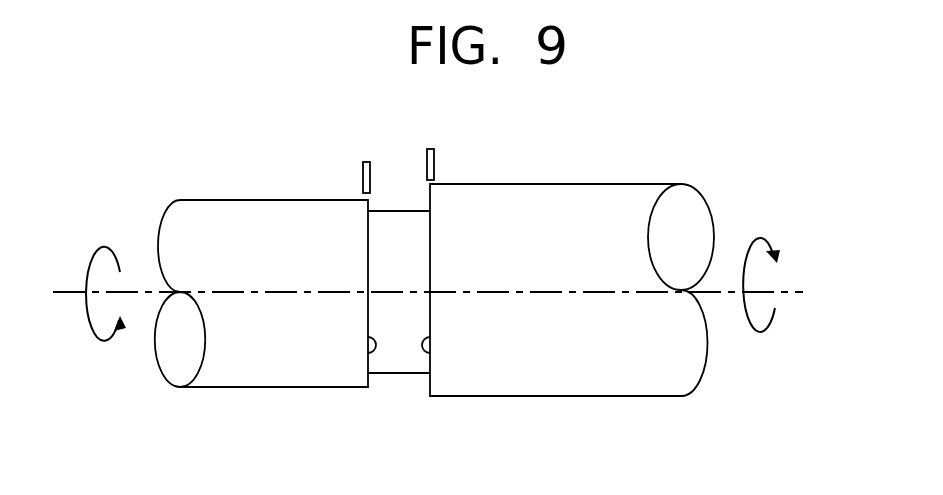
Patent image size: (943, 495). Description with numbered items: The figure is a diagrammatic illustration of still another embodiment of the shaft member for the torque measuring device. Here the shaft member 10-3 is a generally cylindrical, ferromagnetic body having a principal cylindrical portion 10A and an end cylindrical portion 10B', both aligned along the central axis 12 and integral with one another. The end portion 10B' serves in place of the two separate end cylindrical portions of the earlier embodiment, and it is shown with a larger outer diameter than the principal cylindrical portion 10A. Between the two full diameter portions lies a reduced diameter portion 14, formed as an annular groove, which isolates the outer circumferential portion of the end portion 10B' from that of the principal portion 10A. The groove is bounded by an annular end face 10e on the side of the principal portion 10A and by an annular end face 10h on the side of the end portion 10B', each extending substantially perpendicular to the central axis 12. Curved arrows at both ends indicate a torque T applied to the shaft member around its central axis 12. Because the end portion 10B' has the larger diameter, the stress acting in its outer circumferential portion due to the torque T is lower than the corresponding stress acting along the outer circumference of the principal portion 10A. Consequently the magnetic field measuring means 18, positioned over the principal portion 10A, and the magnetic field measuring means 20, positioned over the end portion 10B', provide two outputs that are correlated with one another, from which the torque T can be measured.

The shaft member 10-3 is at (417, 305).
The principal cylindrical portion 10A is at (275, 388).
The end cylindrical portion 10B' is at (572, 326).
The reduced diameter portion 14 is at (403, 374).
The magnetic field measuring means 18 is at (362, 168).
The magnetic field measuring means 20 is at (435, 172).
The annular end face 10e is at (366, 341).
The annular end face 10h is at (433, 340).
The central axis 12 is at (540, 293).
The torque T is at (87, 262).